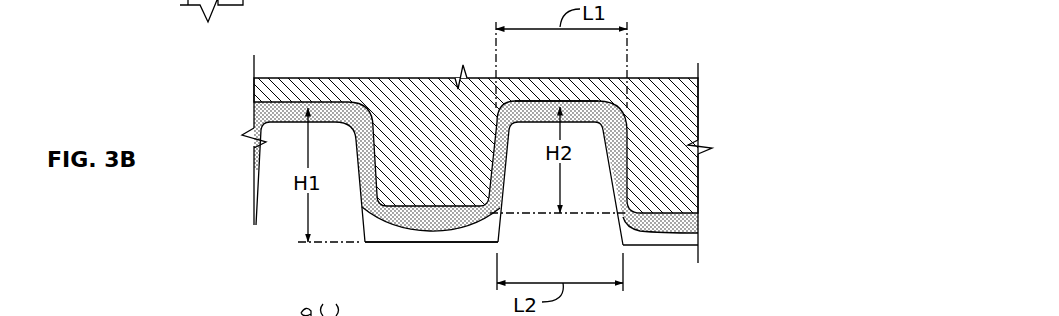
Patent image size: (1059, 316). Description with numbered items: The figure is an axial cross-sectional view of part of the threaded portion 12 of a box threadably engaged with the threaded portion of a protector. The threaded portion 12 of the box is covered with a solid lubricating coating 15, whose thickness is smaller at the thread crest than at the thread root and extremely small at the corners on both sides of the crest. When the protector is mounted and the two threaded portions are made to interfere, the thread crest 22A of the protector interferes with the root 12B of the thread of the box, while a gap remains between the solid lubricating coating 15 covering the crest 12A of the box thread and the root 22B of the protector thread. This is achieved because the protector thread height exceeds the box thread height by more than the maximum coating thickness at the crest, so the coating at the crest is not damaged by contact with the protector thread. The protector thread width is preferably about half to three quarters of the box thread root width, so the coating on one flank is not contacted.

The threaded portion of the box 12 is at (673, 117).
The crest of the thread of the box 12A is at (430, 210).
The root of the thread of the box 12B is at (552, 103).
The solid lubricating coating 15 is at (708, 226).
The thread crest of the protector 22A is at (538, 123).
The root of the thread of the protector 22B is at (433, 244).